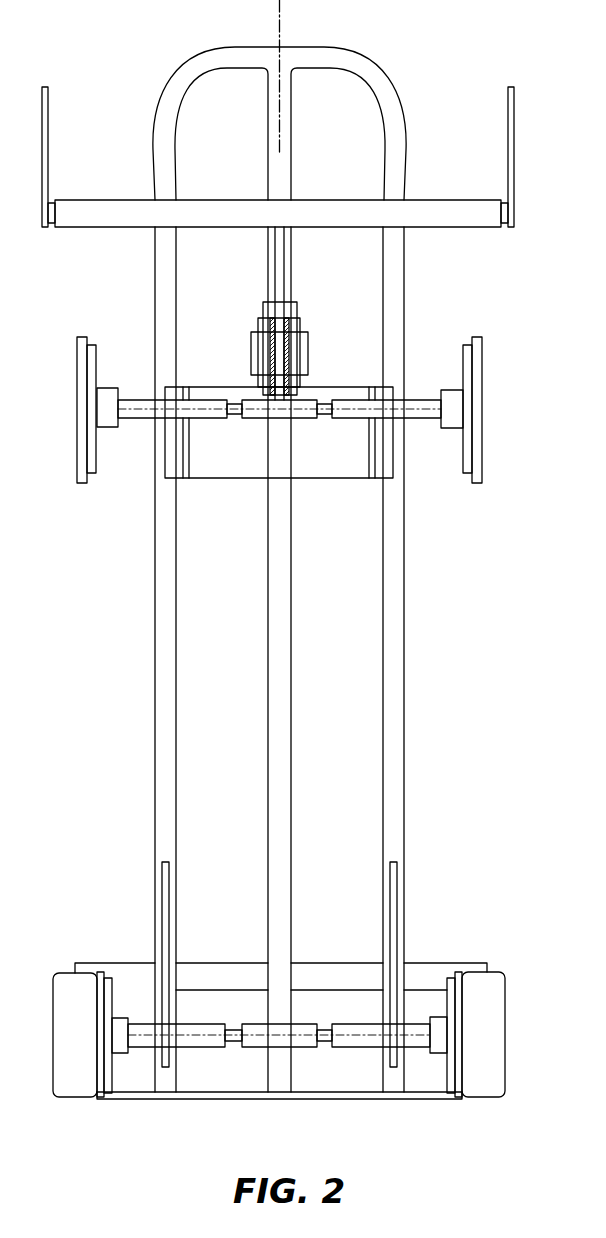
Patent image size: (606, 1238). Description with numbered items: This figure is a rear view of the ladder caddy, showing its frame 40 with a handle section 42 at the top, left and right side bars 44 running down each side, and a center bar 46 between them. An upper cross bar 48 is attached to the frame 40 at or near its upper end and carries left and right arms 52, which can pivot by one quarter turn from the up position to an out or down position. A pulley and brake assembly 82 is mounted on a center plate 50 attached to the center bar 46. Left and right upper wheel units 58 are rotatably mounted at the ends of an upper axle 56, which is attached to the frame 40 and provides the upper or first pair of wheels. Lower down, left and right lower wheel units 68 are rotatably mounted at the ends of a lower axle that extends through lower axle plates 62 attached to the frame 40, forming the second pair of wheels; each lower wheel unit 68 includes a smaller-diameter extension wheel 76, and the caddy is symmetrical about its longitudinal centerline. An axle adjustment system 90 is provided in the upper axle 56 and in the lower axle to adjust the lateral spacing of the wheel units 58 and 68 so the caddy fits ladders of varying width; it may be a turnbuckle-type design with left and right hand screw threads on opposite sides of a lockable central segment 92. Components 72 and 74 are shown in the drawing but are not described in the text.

The frame 40 is at (292, 659).
The handle section 42 is at (328, 57).
The left and right side bars 44 is at (396, 697).
The center bar 46 is at (277, 678).
The upper cross bar 48 is at (457, 207).
The center plate 50 is at (275, 263).
The left and right arms 52 is at (49, 133).
The upper axle 56 is at (206, 420).
The upper wheel units 58 is at (483, 379).
The lower axle plates 62 is at (398, 882).
The lower wheel units 68 is at (306, 1054).
The tire 72 is at (483, 1086).
The right bearing block 74 is at (462, 372).
The extension wheel 76 is at (107, 388).
The pulley and brake assembly 82 is at (292, 345).
The axle adjustment system 90 is at (262, 414).
The lockable central segment 92 is at (257, 1036).